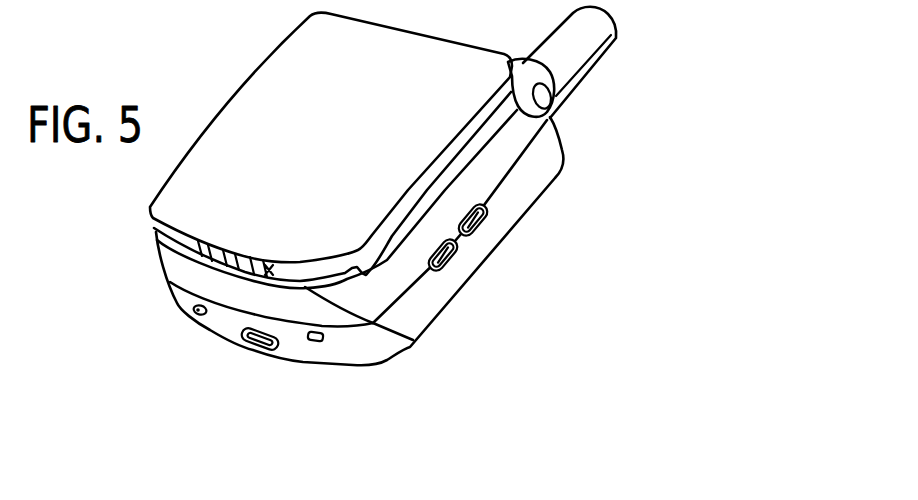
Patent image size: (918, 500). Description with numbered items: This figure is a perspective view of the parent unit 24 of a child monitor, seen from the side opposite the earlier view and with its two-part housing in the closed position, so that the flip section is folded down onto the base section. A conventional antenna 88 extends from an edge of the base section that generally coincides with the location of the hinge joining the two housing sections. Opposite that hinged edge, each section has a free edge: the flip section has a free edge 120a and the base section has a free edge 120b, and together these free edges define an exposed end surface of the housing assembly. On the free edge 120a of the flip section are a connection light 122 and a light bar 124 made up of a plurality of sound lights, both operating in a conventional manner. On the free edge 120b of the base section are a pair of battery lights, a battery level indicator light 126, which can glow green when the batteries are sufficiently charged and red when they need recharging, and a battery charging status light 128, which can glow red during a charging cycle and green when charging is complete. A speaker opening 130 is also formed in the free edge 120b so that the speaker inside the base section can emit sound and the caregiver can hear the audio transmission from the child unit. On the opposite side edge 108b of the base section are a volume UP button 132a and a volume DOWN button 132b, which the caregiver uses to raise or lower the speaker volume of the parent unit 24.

The parent unit 24 is at (595, 140).
The antenna 88 is at (573, 62).
The side edge 108b is at (528, 188).
The free edge 120a is at (151, 214).
The free edge 120b is at (175, 268).
The connection light 122 is at (187, 237).
The light bar 124 is at (407, 343).
The battery level indicator light 126 is at (192, 306).
The battery charging status light 128 is at (320, 341).
The speaker opening 130 is at (250, 345).
The volume UP button 132a is at (488, 227).
The volume DOWN button 132b is at (457, 266).